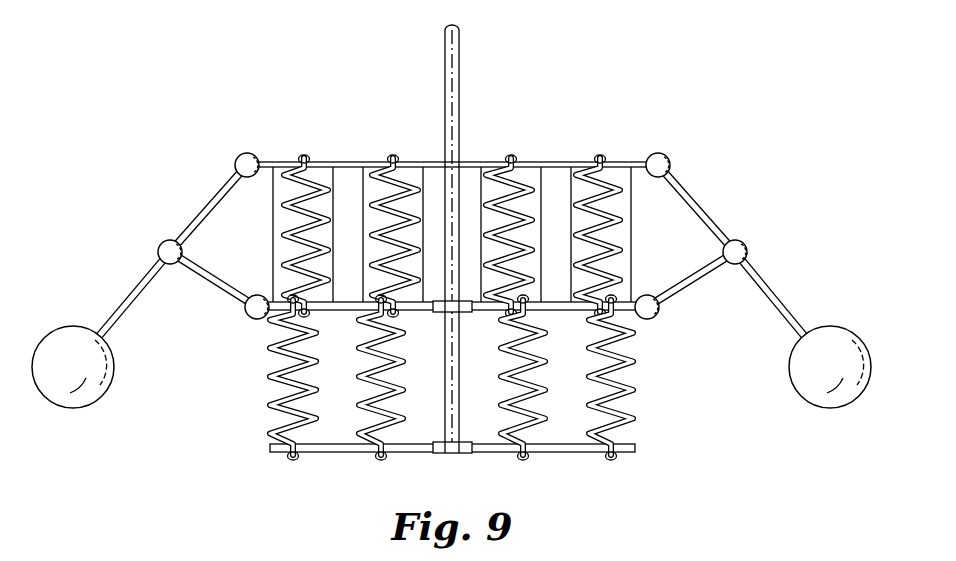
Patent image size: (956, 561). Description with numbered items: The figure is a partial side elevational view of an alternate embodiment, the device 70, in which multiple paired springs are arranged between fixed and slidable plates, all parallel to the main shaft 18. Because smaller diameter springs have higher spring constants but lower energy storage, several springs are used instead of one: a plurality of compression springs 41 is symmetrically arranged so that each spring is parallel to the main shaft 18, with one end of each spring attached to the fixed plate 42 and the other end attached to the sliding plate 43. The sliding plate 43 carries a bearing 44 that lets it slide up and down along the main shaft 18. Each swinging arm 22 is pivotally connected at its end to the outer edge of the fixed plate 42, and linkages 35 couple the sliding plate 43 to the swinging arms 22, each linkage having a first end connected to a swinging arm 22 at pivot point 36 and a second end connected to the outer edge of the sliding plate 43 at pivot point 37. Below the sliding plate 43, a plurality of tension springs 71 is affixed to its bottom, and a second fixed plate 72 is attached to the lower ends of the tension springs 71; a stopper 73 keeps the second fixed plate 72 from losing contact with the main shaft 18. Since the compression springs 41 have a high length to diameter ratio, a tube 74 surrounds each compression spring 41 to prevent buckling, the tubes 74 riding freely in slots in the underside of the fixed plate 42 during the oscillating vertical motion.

The main shaft 18 is at (458, 65).
The device 70 is at (689, 91).
The fixed plate 42 is at (553, 160).
The tube 74 is at (273, 216).
The compression springs 41 is at (285, 290).
The pivot point 36 is at (160, 246).
The swinging arm 22 is at (130, 290).
The linkages 35 is at (212, 288).
The pivot point 37 is at (245, 310).
The sliding plate 43 is at (272, 328).
The tension springs 71 is at (282, 368).
The bearing 44 is at (438, 313).
The stopper 73 is at (458, 453).
The second fixed plate 72 is at (637, 447).